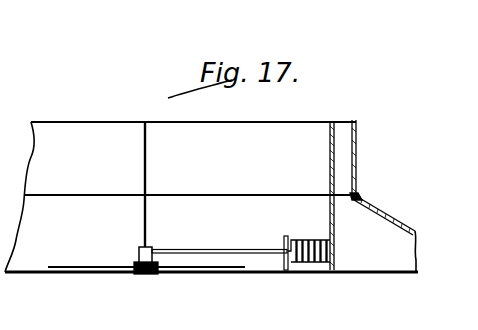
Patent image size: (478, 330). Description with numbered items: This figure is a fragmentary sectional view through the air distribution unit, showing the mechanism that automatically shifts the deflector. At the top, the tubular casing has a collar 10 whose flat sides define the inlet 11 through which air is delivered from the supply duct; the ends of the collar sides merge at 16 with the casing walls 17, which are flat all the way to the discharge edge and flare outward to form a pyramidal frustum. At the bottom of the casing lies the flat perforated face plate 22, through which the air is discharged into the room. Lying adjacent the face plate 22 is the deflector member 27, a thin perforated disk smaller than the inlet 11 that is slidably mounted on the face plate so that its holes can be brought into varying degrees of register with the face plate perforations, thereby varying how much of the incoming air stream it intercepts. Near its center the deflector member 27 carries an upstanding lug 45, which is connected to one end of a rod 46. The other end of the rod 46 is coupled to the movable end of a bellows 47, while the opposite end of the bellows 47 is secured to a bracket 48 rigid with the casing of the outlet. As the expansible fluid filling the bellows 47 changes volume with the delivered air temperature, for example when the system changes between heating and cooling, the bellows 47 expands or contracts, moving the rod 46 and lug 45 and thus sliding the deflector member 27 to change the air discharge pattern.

The inlet 11 is at (214, 138).
The bracket 48 is at (329, 153).
The collar 10 is at (357, 154).
The merge point 16 is at (359, 197).
The casing walls 17 is at (389, 212).
The face plate 22 is at (20, 275).
The deflector member 27 is at (48, 265).
The lug 45 is at (140, 250).
The rod 46 is at (250, 249).
The bellows 47 is at (300, 240).